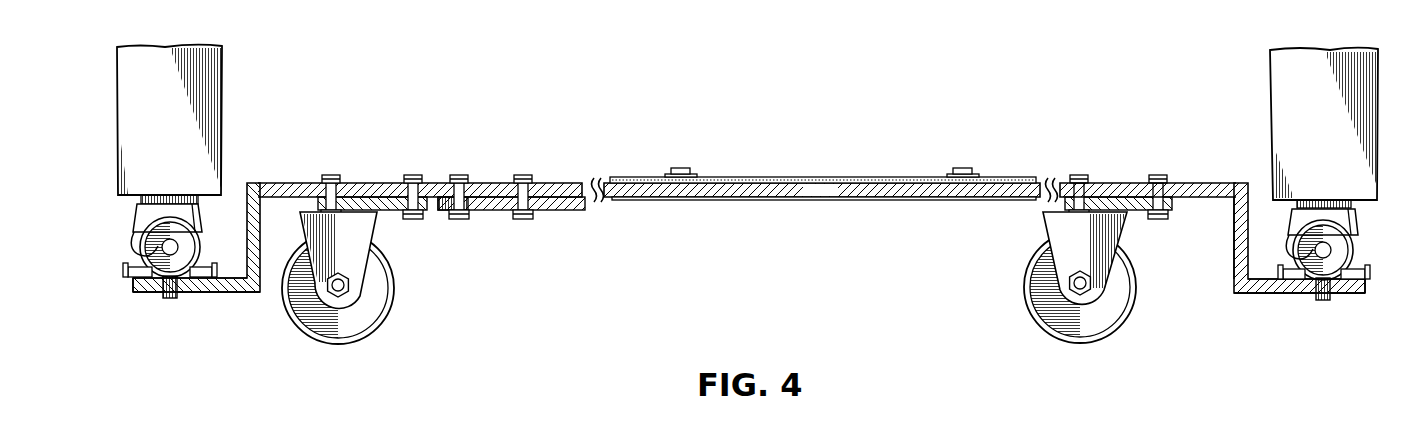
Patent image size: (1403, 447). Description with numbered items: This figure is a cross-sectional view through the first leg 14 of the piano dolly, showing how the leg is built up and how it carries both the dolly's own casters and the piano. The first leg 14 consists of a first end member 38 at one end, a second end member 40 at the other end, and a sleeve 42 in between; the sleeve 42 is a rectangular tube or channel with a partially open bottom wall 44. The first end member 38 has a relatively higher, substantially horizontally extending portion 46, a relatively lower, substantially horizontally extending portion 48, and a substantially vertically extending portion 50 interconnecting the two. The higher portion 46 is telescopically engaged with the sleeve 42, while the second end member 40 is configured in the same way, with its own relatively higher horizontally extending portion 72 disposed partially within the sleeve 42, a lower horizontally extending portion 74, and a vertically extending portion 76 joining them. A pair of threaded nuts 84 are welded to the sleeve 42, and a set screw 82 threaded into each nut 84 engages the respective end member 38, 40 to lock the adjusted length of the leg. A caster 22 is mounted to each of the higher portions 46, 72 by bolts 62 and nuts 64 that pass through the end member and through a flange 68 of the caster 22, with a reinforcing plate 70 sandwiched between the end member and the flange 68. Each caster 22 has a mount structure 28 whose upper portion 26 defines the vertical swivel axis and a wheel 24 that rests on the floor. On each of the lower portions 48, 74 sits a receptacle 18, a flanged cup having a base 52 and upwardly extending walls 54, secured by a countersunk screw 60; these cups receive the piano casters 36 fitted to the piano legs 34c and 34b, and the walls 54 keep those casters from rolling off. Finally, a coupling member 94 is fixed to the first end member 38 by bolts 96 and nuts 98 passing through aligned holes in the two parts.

The first leg 14 is at (863, 131).
The receptacle 18 is at (126, 283).
The caster 22 is at (384, 335).
The wheel 24 is at (333, 343).
The upper portion 26 is at (370, 241).
The mount structure 28 is at (372, 288).
The leg 34b is at (1272, 99).
The leg 34c is at (224, 93).
The caster 36 is at (150, 218).
The first end member 38 is at (300, 181).
The second end member 40 is at (1196, 181).
The sleeve 42 is at (820, 178).
The bottom wall 44 is at (722, 201).
The first substantially horizontally extending portion 46 is at (490, 186).
The second substantially horizontally extending portion 48 is at (226, 293).
The substantially vertically extending portion 50 is at (248, 185).
The base 52 is at (146, 295).
The wall 54 is at (124, 272).
The countersunk screw 60 is at (170, 299).
The bolt 62 is at (331, 175).
The nut 64 is at (321, 212).
The flange 68 is at (390, 206).
The reinforcing plate 70 is at (362, 198).
The first substantially horizontally extending portion 72 is at (1206, 200).
The second substantially horizontally extending portion 74 is at (1260, 294).
The substantially vertically extending portion 76 is at (1232, 258).
The set screw 82 is at (681, 168).
The threaded nut 84 is at (698, 175).
The coupling member 94 is at (566, 212).
The bolt 96 is at (459, 175).
The nut 98 is at (459, 220).